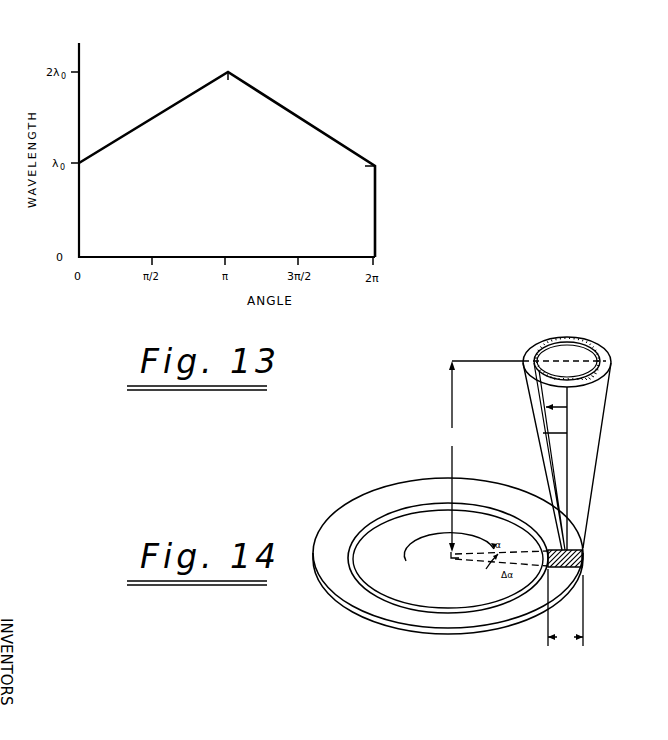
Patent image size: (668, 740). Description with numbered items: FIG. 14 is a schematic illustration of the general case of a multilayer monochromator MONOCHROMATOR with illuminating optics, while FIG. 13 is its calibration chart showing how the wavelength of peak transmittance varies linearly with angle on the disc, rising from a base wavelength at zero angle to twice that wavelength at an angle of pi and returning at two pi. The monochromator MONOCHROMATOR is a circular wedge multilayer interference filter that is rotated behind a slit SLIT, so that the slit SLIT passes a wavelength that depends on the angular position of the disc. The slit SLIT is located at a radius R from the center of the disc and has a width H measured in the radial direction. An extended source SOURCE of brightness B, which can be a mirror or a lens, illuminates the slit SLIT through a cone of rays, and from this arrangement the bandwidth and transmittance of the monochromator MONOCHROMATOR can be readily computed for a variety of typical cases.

The multilayer monochromator MONOCHROMATOR is at (375, 610).
The slit SLIT is at (573, 550).
The slit width H is at (565, 607).
The extended source of brightness B SOURCE is at (550, 355).
The radius to the slit R is at (485, 456).